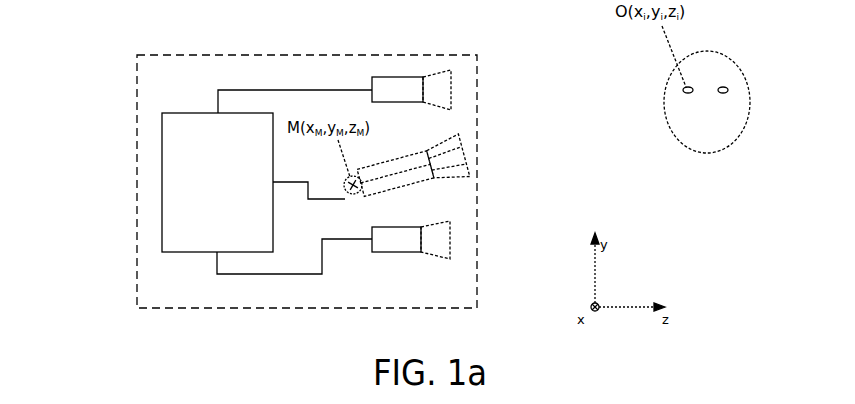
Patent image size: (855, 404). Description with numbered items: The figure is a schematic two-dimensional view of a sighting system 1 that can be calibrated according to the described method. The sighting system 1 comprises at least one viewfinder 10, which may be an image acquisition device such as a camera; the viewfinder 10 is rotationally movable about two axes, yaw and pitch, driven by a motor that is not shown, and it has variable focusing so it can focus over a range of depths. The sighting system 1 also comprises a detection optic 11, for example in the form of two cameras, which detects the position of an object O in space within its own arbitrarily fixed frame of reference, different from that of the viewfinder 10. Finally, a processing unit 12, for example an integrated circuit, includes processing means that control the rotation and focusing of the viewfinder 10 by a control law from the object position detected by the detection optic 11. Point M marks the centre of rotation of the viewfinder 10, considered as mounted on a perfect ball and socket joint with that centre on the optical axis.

The sighting system 1 is at (128, 82).
The viewfinder 10 is at (452, 165).
The detection optic 11 is at (437, 89).
The processing unit 12 is at (225, 193).